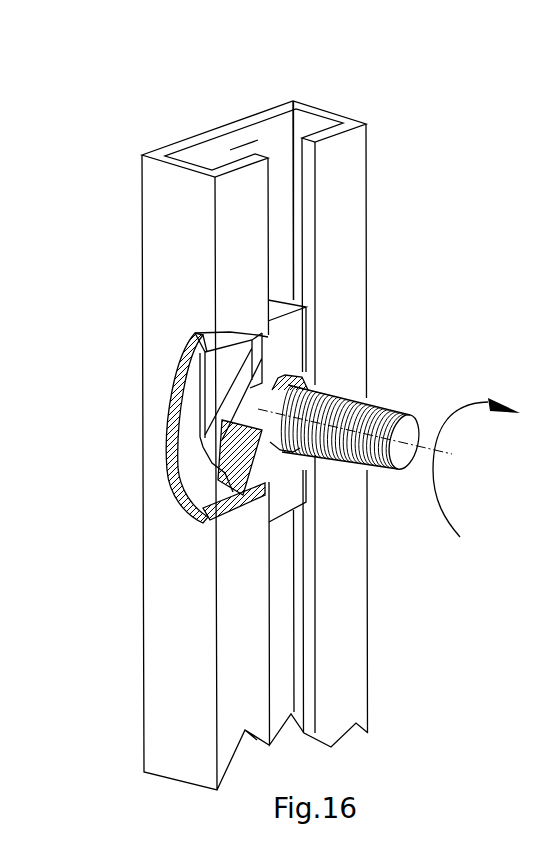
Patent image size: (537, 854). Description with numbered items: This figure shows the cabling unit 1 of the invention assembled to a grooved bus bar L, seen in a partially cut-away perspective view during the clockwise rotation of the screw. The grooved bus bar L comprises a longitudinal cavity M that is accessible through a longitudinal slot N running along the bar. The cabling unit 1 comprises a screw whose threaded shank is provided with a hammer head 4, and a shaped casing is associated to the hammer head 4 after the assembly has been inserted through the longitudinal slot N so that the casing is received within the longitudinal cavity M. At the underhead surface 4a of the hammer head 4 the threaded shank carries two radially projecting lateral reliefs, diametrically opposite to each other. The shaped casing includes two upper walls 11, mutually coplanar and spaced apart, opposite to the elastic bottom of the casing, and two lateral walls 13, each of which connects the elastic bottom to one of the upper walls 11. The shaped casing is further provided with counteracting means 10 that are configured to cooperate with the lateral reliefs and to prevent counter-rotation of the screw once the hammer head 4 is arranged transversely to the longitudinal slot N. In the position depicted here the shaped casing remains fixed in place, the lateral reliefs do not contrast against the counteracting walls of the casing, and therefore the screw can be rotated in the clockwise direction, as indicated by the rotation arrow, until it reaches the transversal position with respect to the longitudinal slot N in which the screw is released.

The grooved bus bar L is at (222, 409).
The longitudinal cavity M is at (277, 130).
The edge of profile P is at (237, 143).
The longitudinal slot N is at (290, 159).
The lateral walls 13 is at (283, 304).
The cabling unit 1 is at (260, 409).
The upper walls 11 is at (258, 356).
The hammer head 4 is at (250, 454).
The underhead surface 4a is at (240, 465).
The counteracting means 10 is at (256, 421).